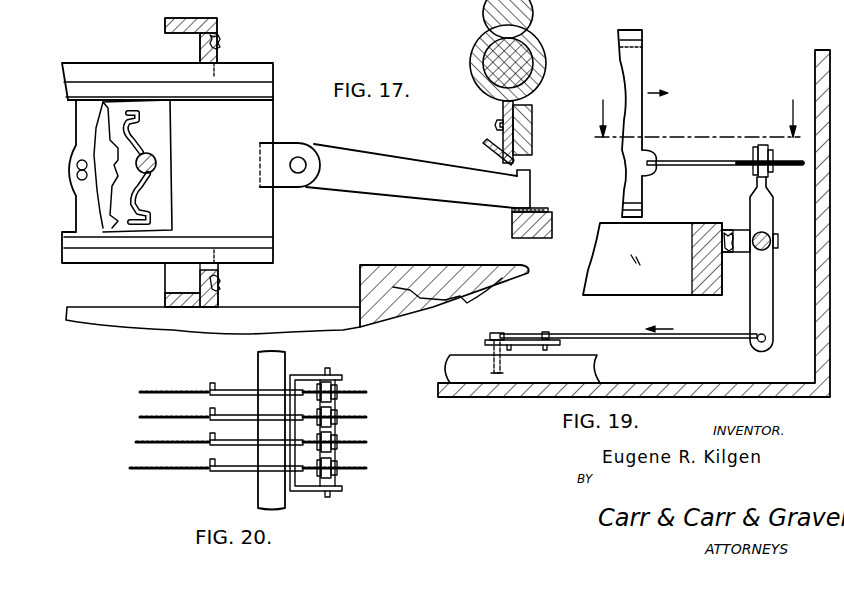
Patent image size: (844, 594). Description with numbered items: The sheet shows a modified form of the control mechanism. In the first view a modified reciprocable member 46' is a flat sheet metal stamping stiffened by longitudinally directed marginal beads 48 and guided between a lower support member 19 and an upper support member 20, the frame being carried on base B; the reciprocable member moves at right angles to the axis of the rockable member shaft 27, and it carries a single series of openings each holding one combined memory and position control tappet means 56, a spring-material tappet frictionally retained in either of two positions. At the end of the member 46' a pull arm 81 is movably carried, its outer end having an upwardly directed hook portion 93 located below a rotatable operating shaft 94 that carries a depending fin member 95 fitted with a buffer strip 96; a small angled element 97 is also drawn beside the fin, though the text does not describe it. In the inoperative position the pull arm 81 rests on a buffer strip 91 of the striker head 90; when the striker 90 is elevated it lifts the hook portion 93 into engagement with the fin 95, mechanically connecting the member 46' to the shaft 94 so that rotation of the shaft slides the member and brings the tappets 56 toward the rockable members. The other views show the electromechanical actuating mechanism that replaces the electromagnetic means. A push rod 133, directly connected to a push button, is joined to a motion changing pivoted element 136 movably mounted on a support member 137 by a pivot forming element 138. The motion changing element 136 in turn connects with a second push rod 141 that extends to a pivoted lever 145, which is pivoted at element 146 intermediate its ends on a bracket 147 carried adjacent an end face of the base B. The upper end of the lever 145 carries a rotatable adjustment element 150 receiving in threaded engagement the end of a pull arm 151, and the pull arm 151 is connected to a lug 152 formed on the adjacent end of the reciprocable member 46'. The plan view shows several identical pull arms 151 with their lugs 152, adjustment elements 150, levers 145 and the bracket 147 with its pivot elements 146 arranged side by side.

In FIG. 17, the upper support member 20 is at (168, 39).
In FIG. 19, the upper support member 20 is at (696, 108).
In FIG. 17, the marginal bead 48 is at (262, 91).
In FIG. 17, the modified reciprocable member 46' is at (188, 181).
In FIG. 19, the modified reciprocable member 46' is at (647, 123).
In FIG. 20, the modified reciprocable member 46' is at (154, 430).
In FIG. 17, the tappet means 56 is at (92, 129).
In FIG. 17, the rockable member shaft 27 is at (157, 165).
In FIG. 17, the lug 152 is at (280, 185).
In FIG. 19, the lug 152 is at (648, 178).
In FIG. 20, the lug 152 is at (217, 390).
In FIG. 17, the pull arm 81 is at (395, 190).
In FIG. 17, the hook portion 93 is at (530, 182).
In FIG. 17, the buffer strip 91 is at (545, 211).
In FIG. 17, the striker head 90 is at (512, 228).
In FIG. 17, the rotatable shaft 94 is at (519, 57).
In FIG. 17, the fin member 95 is at (503, 110).
In FIG. 17, the buffer strip 96 is at (532, 109).
In FIG. 17, the lever 97 is at (489, 151).
In FIG. 17, the lower support member 19 is at (167, 294).
In FIG. 17, the base B is at (321, 307).
In FIG. 19, the base B is at (592, 265).
In FIG. 19, the rotatable adjustment element 150 is at (755, 152).
In FIG. 20, the rotatable adjustment element 150 is at (338, 466).
In FIG. 19, the pull arm 151 is at (680, 166).
In FIG. 20, the pull arm 151 is at (248, 395).
In FIG. 19, the bracket 147 is at (738, 231).
In FIG. 20, the bracket 147 is at (293, 376).
In FIG. 19, the pivot element 146 is at (778, 241).
In FIG. 20, the pivot element 146 is at (331, 374).
In FIG. 19, the pivoted lever 145 is at (770, 296).
In FIG. 20, the pivoted lever 145 is at (324, 452).
In FIG. 19, the push rod 141 is at (683, 340).
In FIG. 19, the push rod 133 is at (546, 332).
In FIG. 19, the pivot forming element 138 is at (503, 323).
In FIG. 19, the motion changing pivoted element 136 is at (514, 347).
In FIG. 19, the support member 137 is at (594, 364).